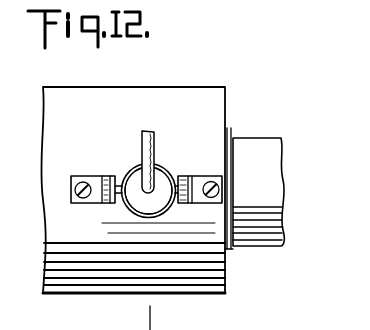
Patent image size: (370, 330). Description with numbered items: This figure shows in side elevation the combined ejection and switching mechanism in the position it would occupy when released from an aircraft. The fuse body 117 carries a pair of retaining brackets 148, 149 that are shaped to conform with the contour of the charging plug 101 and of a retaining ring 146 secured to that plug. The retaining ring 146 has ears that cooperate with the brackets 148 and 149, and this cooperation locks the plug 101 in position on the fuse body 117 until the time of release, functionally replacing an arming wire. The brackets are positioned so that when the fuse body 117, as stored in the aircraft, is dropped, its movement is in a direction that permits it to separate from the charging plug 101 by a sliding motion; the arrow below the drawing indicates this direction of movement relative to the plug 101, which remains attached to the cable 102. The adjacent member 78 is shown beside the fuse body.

The fuse body 117 is at (138, 96).
The adjacent member 78 is at (254, 142).
The bracket 148 is at (91, 177).
The bracket 149 is at (205, 178).
The retaining ring 146 is at (160, 170).
The charging plug 101 is at (138, 202).
The cable 102 is at (153, 139).